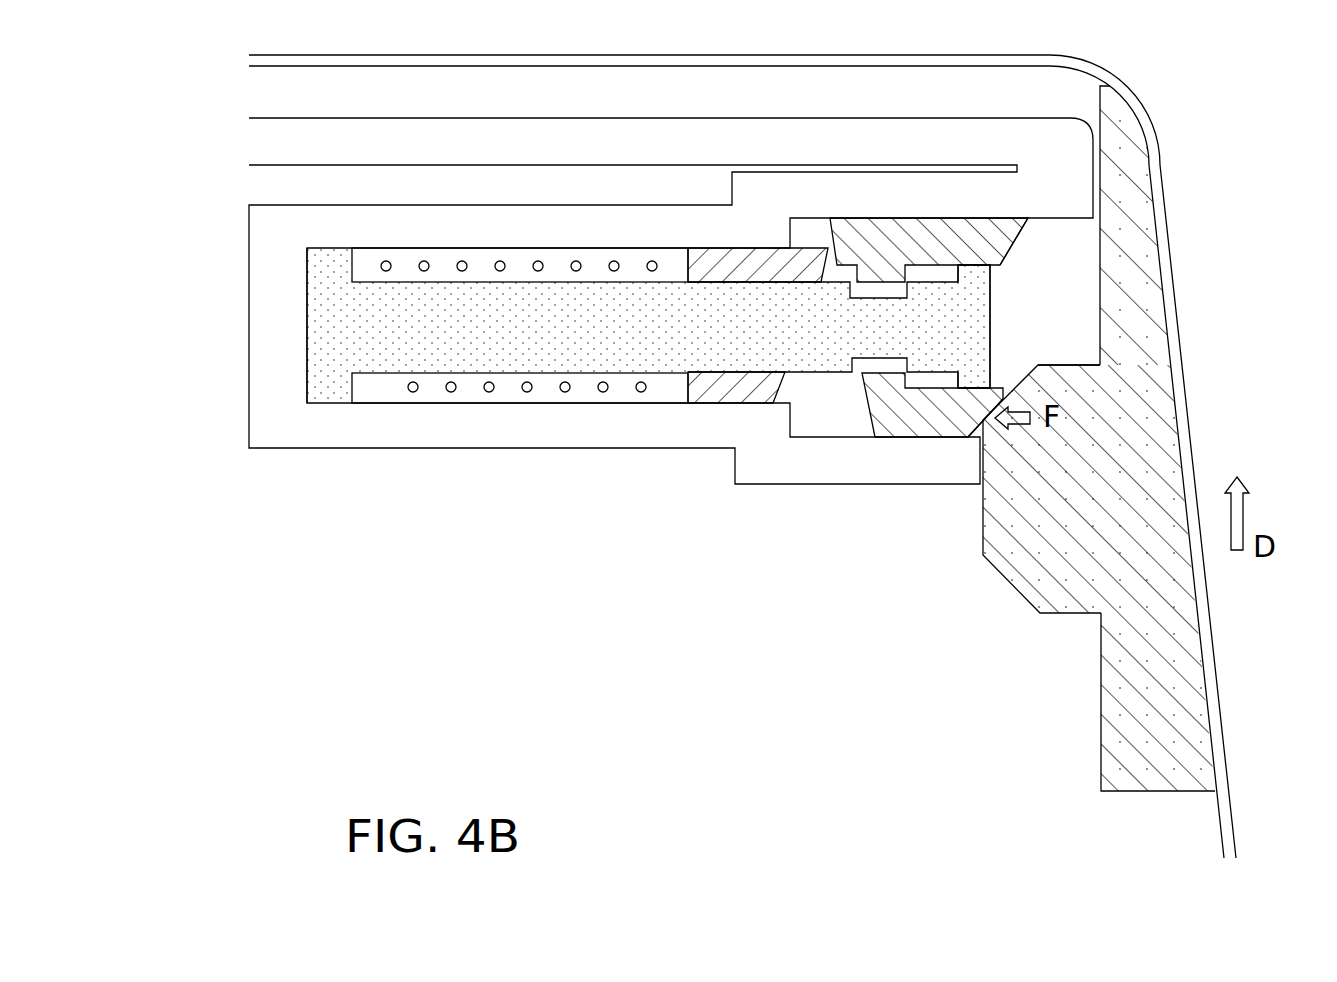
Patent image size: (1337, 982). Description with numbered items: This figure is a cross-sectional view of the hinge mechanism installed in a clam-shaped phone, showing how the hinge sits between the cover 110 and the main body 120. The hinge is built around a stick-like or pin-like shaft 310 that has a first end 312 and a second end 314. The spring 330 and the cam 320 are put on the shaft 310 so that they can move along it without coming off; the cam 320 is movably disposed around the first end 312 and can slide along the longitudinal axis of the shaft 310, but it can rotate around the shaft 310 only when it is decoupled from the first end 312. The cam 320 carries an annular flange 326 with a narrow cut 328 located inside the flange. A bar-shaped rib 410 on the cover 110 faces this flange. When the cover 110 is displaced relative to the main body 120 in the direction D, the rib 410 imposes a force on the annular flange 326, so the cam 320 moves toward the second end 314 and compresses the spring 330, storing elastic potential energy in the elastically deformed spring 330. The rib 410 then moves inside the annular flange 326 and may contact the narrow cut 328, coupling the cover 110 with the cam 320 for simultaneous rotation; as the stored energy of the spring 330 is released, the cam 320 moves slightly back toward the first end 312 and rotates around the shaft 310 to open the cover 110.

The cover 110 is at (1153, 110).
The main body 120 is at (255, 142).
The shaft 310 is at (803, 362).
The first end 312 is at (975, 300).
The second end 314 is at (313, 308).
The cam 320 is at (900, 235).
The annular flange 326 is at (1020, 235).
The narrow cut 328 is at (1000, 345).
The spring 330 is at (363, 264).
The rib 410 is at (992, 538).